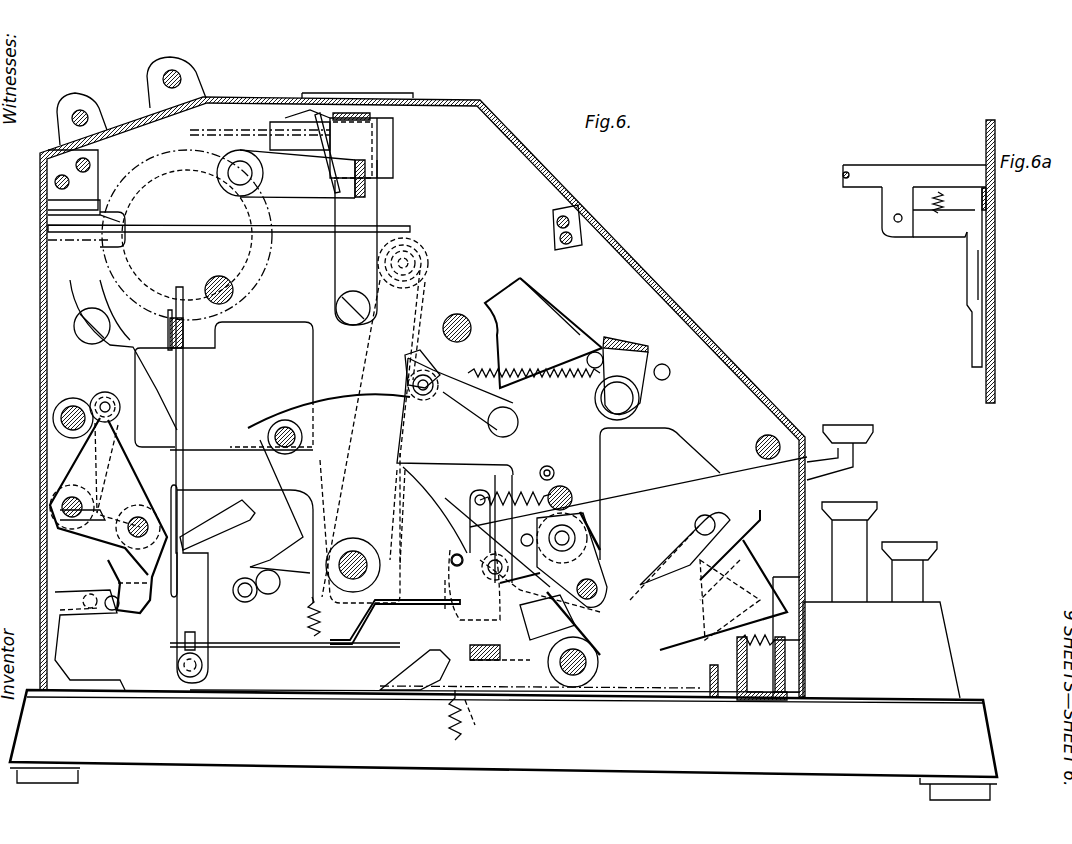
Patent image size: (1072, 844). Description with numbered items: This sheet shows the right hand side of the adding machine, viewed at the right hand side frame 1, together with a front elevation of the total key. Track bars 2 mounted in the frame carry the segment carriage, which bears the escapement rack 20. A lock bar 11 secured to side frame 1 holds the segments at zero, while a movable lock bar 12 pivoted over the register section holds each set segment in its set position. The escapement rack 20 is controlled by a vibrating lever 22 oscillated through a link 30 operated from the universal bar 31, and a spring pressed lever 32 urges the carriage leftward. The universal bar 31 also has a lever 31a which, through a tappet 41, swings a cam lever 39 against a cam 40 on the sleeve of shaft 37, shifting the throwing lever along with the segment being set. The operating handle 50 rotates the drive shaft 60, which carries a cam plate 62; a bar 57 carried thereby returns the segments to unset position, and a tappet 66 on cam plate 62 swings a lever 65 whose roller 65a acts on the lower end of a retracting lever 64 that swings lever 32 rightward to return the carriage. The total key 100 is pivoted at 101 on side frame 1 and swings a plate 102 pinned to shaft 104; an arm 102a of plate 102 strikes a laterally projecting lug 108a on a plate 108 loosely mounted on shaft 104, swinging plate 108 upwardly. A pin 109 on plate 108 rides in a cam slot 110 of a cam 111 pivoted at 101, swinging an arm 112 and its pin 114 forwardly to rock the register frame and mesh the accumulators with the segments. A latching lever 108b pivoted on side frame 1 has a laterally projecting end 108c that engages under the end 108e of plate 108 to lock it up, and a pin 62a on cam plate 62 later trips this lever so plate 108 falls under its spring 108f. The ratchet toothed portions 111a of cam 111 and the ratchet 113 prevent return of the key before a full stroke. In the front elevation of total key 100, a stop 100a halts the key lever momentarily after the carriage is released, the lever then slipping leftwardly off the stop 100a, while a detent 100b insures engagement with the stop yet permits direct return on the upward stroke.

In FIG. 6, the right hand side frame 1 is at (540, 182).
In FIG. 6A, the right hand side frame 1 is at (983, 385).
In FIG. 6, the lock bar 11 is at (575, 205).
In FIG. 6, the movable lock bar 12 is at (620, 345).
In FIG. 6, the track bars 2 is at (218, 278).
In FIG. 6, the escapement rack 20 is at (232, 344).
In FIG. 6, the vibrating lever 22 is at (178, 290).
In FIG. 6, the link 30 is at (183, 365).
In FIG. 6, the universal bar 31 is at (705, 672).
In FIG. 6, the lever 31a is at (300, 640).
In FIG. 6, the spring pressed lever 32 is at (300, 228).
In FIG. 6, the shaft 37 is at (60, 405).
In FIG. 6, the cam lever 39 is at (125, 468).
In FIG. 6, the cam 40 is at (55, 410).
In FIG. 6, the tappet 41 is at (95, 590).
In FIG. 6, the operating handle 50 is at (425, 255).
In FIG. 6, the bar 57 is at (278, 425).
In FIG. 6, the drive shaft 60 is at (372, 533).
In FIG. 6, the cam plate 62 is at (393, 470).
In FIG. 6, the pin 62a is at (445, 565).
In FIG. 6, the retracting lever 64 is at (100, 262).
In FIG. 6, the lever 65 is at (78, 452).
In FIG. 6, the roller 65a is at (105, 400).
In FIG. 6, the tappet 66 is at (242, 584).
In FIG. 6, the total key 100 is at (845, 428).
In FIG. 6A, the total key 100 is at (990, 200).
In FIG. 6A, the stop 100a is at (990, 262).
In FIG. 6A, the detent 100b is at (900, 237).
In FIG. 6, the pivot 101 is at (567, 510).
In FIG. 6, the plate 102 is at (690, 520).
In FIG. 6, the arm 102a is at (590, 600).
In FIG. 6, the shaft 104 is at (600, 668).
In FIG. 6, the plate 108 is at (445, 630).
In FIG. 6, the lug 108a is at (548, 605).
In FIG. 6, the latching lever 108b is at (510, 478).
In FIG. 6, the laterally projecting end 108c is at (520, 700).
In FIG. 6, the end 108e is at (470, 715).
In FIG. 6, the spring 108f is at (435, 730).
In FIG. 6, the pin 109 is at (470, 546).
In FIG. 6, the cam slot 110 is at (475, 505).
In FIG. 6, the cam 111 is at (540, 520).
In FIG. 6, the ratchet toothed portions 111a is at (735, 545).
In FIG. 6, the arm 112 is at (595, 550).
In FIG. 6, the ratchet 113 is at (725, 655).
In FIG. 6, the pin 114 is at (605, 590).